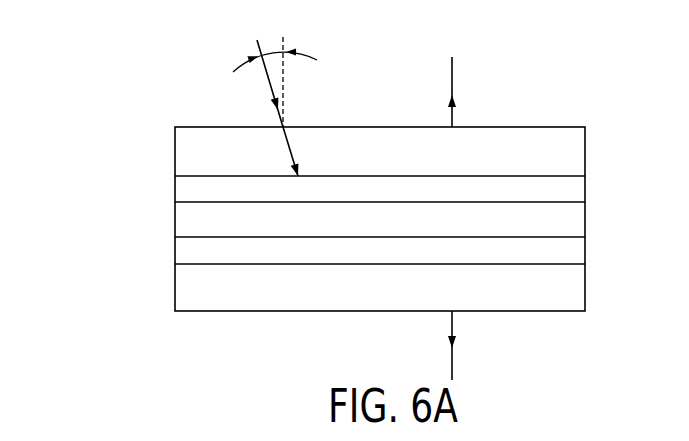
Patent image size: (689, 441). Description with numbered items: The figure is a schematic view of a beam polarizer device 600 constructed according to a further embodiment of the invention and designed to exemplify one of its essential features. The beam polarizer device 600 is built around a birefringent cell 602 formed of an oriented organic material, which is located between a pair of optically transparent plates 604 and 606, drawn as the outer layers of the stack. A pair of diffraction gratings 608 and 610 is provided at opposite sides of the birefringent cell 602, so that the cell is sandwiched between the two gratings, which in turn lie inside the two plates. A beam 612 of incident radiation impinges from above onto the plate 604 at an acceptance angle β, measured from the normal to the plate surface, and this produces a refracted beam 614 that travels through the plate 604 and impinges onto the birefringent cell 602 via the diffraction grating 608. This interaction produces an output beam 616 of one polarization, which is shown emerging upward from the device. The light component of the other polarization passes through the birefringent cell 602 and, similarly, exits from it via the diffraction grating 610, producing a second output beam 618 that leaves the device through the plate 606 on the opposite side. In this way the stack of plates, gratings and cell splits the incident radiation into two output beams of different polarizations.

The beam polarizer device 600 is at (92, 84).
The birefringent cell 602 is at (162, 216).
The optically transparent plate 604 is at (579, 154).
The optically transparent plate 606 is at (579, 302).
The diffraction grating 608 is at (577, 188).
The diffraction grating 610 is at (579, 253).
The beam of incident radiation 612 is at (256, 47).
The refracted beam 614 is at (292, 143).
The output beam 616 is at (452, 118).
The output beam 618 is at (452, 323).